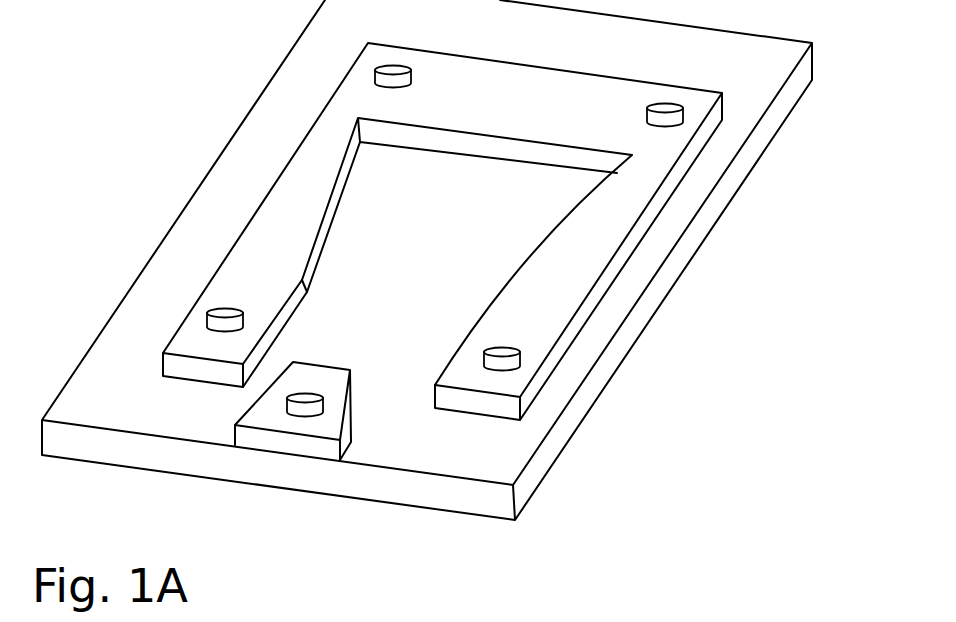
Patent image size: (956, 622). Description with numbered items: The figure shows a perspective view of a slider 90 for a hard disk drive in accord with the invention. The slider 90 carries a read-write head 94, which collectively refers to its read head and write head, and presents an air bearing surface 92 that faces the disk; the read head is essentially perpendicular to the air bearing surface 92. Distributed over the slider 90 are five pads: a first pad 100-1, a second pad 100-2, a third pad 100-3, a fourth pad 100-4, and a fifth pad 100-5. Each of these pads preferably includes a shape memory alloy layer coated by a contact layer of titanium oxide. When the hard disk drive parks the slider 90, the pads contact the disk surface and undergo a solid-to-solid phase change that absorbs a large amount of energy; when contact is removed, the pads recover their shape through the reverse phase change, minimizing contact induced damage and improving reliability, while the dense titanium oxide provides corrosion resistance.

The slider 90 is at (832, 538).
The air bearing surface 92 is at (317, 365).
The read-write head 94 is at (293, 417).
The first pad 100-1 is at (287, 398).
The second pad 100-2 is at (244, 316).
The third pad 100-3 is at (520, 353).
The fourth pad 100-4 is at (411, 72).
The fifth pad 100-5 is at (647, 111).